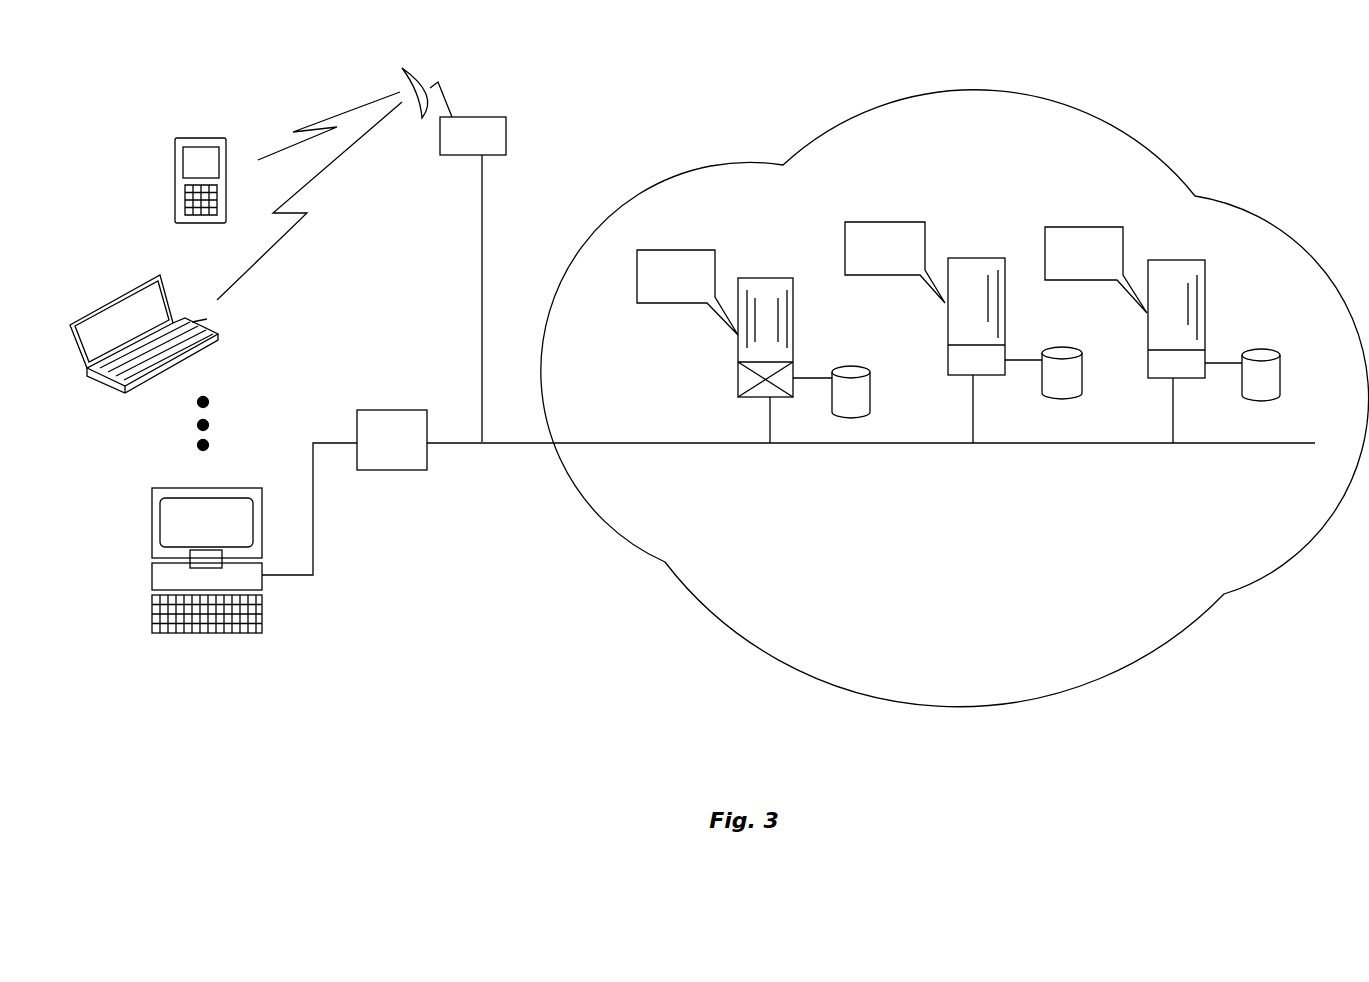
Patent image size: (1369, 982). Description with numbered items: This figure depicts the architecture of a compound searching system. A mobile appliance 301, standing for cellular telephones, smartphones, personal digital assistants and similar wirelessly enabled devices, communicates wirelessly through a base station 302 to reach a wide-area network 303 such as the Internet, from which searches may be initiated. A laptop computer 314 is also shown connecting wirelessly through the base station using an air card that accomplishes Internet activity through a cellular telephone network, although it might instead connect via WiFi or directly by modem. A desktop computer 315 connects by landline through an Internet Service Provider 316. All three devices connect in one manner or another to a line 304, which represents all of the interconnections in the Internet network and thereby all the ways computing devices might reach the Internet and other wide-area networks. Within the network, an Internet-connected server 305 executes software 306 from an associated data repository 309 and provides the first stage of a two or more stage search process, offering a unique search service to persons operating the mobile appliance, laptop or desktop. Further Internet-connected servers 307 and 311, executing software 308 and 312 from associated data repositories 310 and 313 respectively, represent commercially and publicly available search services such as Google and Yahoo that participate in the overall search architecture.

The mobile appliance 301 is at (204, 130).
The base station 302 is at (478, 112).
The wide-area network 303 is at (653, 202).
The line 304 is at (588, 440).
The Internet-connected server 305 is at (760, 280).
The software 306 is at (663, 250).
The Internet-connected server 307 is at (965, 258).
The software 308 is at (865, 222).
The data repository 309 is at (850, 363).
The data repository 310 is at (1063, 343).
The Internet-connected server 311 is at (1165, 262).
The software 312 is at (1065, 225).
The data repository 313 is at (1262, 345).
The laptop computer 314 is at (98, 300).
The desktop computer 315 is at (143, 533).
The Internet Service Provider 316 is at (387, 420).